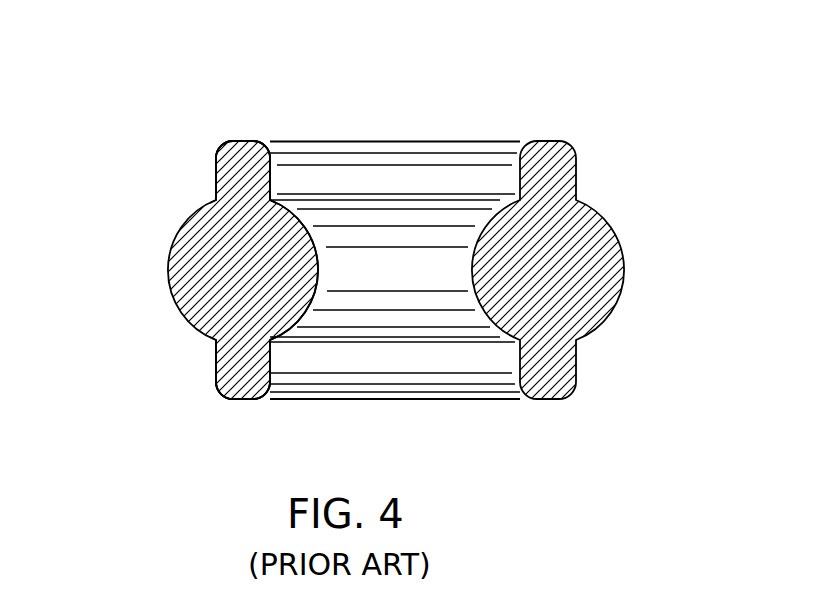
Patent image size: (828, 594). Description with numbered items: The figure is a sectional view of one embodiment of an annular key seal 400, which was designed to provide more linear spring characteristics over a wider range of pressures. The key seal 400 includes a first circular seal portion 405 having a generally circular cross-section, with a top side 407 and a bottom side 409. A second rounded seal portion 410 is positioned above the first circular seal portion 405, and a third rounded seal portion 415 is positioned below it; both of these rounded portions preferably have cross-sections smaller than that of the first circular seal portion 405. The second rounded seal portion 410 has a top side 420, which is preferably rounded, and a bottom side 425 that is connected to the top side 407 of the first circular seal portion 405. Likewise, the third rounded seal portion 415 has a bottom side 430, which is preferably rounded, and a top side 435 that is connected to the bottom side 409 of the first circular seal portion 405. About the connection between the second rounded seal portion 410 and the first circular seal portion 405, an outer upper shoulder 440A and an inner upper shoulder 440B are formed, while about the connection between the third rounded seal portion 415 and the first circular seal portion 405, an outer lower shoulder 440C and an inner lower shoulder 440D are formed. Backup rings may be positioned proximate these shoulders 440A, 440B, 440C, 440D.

The key seal 400 is at (637, 211).
The first circular seal portion 405 is at (175, 300).
The top side of first circular seal portion 407 is at (227, 218).
The bottom side of first circular seal portion 409 is at (248, 332).
The second rounded seal portion 410 is at (215, 162).
The third rounded seal portion 415 is at (213, 370).
The top side of second rounded seal portion 420 is at (235, 140).
The bottom side of second rounded seal portion 425 is at (273, 180).
The bottom side of third rounded seal portion 430 is at (248, 400).
The top side of third rounded seal portion 435 is at (222, 349).
The outer upper shoulder 440A is at (200, 185).
The inner upper shoulder 440B is at (293, 183).
The outer lower shoulder 440C is at (190, 342).
The inner lower shoulder 440D is at (288, 359).